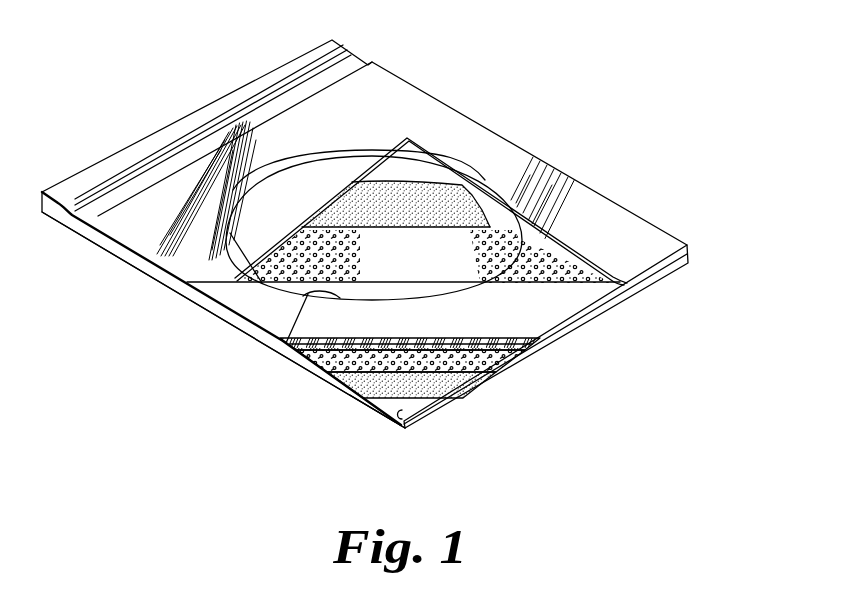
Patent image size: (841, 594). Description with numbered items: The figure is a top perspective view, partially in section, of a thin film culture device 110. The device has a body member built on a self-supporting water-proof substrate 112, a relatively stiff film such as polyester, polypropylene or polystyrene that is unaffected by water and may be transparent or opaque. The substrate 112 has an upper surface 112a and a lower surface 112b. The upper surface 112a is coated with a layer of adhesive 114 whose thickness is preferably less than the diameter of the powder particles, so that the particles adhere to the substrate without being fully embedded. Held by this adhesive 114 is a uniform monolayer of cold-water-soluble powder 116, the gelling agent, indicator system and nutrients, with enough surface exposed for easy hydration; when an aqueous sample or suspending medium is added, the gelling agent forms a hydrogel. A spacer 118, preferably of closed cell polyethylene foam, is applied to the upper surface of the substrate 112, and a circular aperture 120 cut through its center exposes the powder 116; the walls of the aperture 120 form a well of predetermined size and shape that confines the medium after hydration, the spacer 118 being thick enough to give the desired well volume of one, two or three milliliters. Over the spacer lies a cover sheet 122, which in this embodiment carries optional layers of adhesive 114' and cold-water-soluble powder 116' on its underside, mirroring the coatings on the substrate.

The culture device 110 is at (480, 52).
The substrate 112 is at (421, 441).
The upper surface 112a is at (395, 419).
The lower surface 112b is at (374, 412).
The adhesive 114 is at (422, 414).
The adhesive 114' is at (442, 162).
The cold-water-soluble powder 116 is at (385, 387).
The cold-water-soluble powder 116' is at (432, 205).
The spacer 118 is at (257, 312).
The circular aperture 120 is at (307, 295).
The cover sheet 122 is at (627, 220).